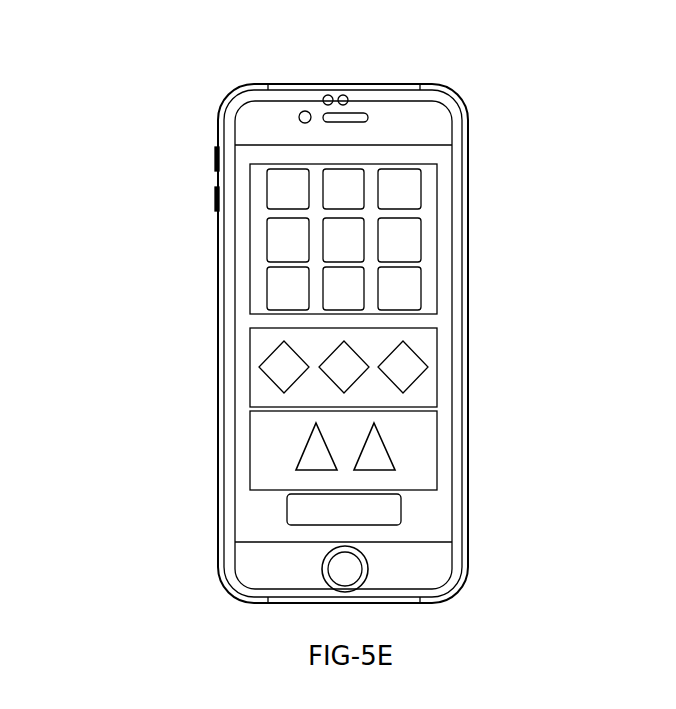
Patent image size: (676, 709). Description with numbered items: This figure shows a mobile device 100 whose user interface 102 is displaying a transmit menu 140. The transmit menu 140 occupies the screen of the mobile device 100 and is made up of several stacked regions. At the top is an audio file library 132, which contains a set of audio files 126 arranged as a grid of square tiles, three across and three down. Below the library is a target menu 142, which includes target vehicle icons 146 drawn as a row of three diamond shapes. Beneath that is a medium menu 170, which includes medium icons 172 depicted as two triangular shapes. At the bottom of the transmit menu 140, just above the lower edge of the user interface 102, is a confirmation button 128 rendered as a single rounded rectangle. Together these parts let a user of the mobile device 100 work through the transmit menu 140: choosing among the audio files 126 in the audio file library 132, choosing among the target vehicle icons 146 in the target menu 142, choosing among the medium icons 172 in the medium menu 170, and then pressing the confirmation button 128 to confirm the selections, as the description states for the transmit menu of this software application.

The mobile device 100 is at (186, 197).
The user interface 102 is at (444, 278).
The audio files 126 is at (271, 246).
The confirmation button 128 is at (382, 512).
The audio file library 132 is at (262, 296).
The transmit menu 140 is at (444, 308).
The target menu 142 is at (425, 393).
The target vehicle icons 146 is at (409, 364).
The medium menu 170 is at (429, 430).
The medium icons 172 is at (380, 462).